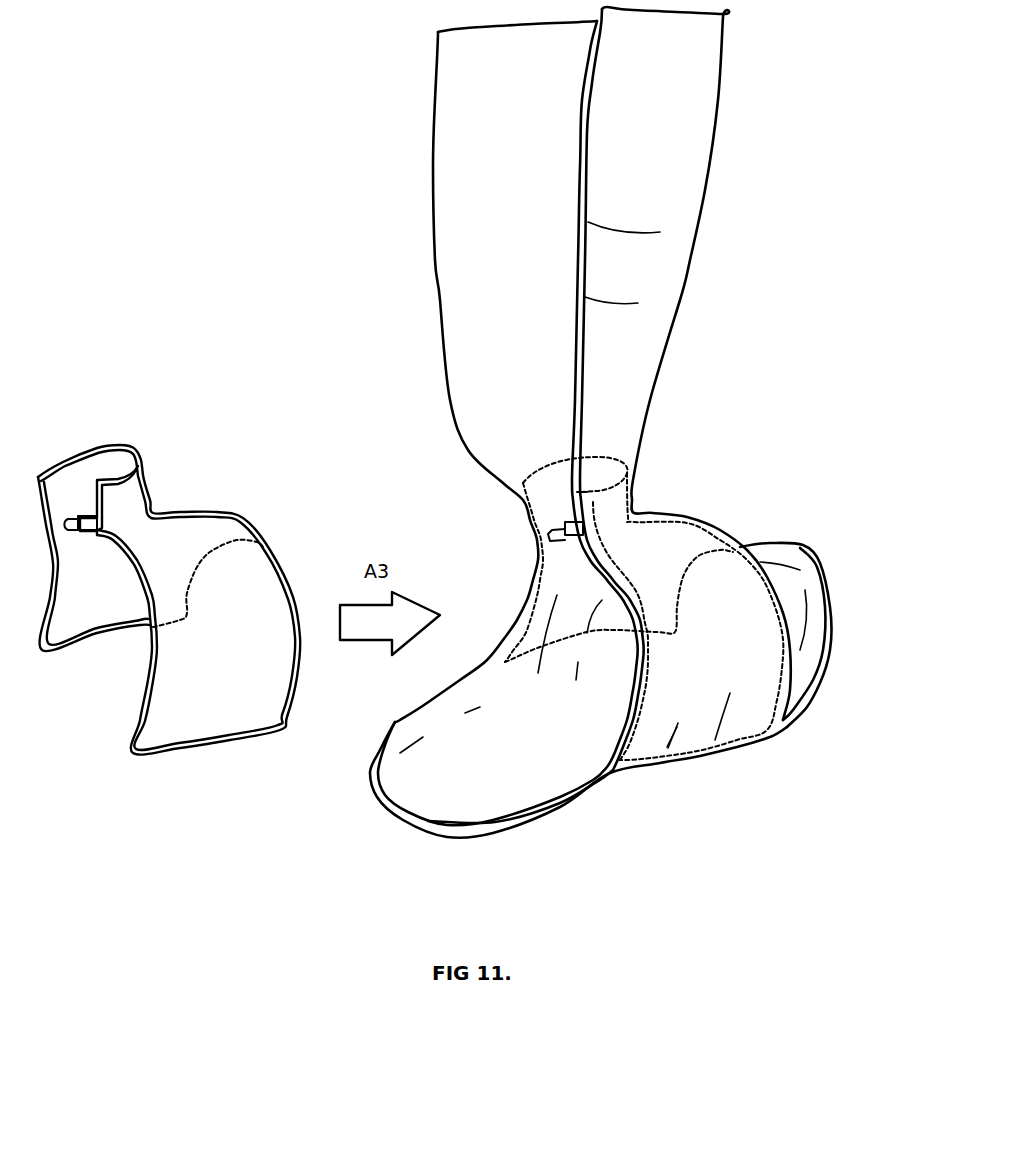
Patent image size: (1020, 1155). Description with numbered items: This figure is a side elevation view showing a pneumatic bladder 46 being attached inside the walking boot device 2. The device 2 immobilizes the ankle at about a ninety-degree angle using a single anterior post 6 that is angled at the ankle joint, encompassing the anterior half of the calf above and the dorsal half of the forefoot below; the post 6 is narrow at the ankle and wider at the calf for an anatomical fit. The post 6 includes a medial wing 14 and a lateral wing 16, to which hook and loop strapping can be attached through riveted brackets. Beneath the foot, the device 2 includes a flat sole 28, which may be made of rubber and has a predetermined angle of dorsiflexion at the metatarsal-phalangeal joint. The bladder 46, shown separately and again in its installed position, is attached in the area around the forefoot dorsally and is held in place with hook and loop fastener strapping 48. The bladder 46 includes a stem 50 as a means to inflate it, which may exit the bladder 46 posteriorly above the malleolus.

The walking boot device 2 is at (633, 422).
The anterior post 6 is at (694, 283).
The medial wing 14 is at (428, 307).
The lateral wing 16 is at (577, 280).
The sole 28 is at (806, 731).
The pneumatic bladder 46 is at (528, 583).
The hook and loop fastener strapping 48 is at (530, 481).
The stem 50 is at (583, 535).